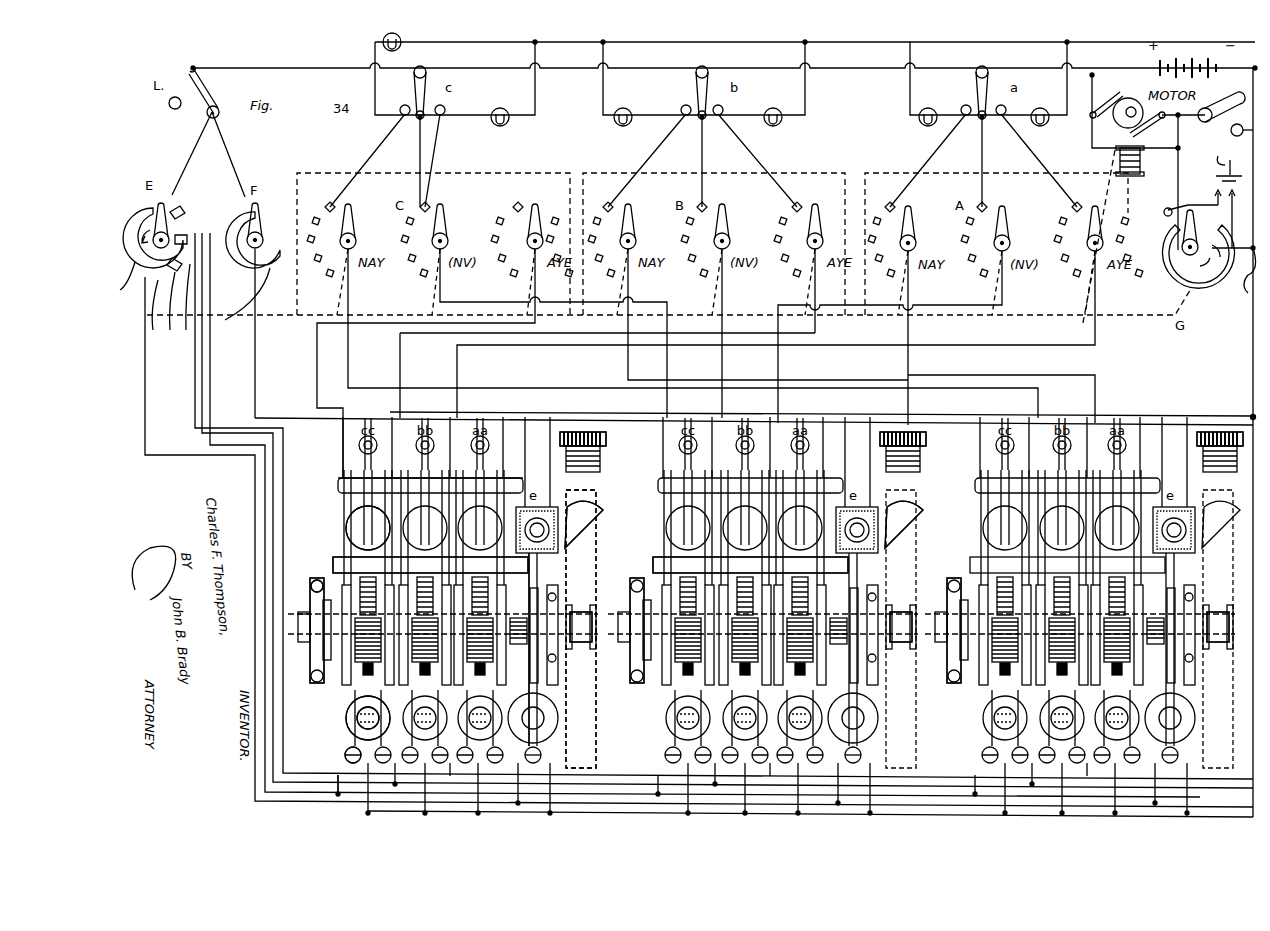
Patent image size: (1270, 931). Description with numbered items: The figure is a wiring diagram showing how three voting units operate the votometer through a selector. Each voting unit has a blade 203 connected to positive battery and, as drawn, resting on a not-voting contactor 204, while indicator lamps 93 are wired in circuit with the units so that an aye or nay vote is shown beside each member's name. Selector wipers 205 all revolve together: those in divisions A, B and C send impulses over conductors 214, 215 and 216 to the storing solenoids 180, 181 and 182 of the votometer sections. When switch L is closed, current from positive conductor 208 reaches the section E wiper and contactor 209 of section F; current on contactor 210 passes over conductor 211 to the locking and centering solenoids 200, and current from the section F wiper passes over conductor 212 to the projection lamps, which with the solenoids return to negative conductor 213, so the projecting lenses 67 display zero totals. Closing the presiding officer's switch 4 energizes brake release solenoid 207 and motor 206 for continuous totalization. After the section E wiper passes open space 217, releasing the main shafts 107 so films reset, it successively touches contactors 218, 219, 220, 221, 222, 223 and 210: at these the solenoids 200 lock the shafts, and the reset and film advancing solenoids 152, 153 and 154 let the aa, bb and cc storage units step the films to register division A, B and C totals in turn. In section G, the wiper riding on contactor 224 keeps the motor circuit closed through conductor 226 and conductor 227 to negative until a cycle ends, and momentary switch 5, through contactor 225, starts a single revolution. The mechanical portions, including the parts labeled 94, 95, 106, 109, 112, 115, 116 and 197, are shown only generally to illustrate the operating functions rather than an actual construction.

The indicator lamp 93 is at (382, 47).
The blade 203 is at (415, 92).
The not-voting contactor 204 is at (685, 161).
The selector wiper 205 is at (1180, 215).
The selector driving motor 206 is at (1135, 96).
The brake release solenoid 207 is at (1118, 160).
The positive conductor 208 is at (812, 70).
The contactor 209 is at (259, 266).
The contactor 210 is at (650, 515).
The conductor 211 is at (146, 412).
The conductor 212 is at (262, 297).
The negative conductor 213 is at (1252, 348).
The conductor 214 is at (440, 292).
The conductor 215 is at (722, 292).
The conductor 216 is at (1002, 292).
The open space 217 is at (158, 330).
The contactor 218 is at (174, 328).
The contactor 219 is at (190, 325).
The contactor 220 is at (724, 506).
The contactor 221 is at (727, 510).
The contactor 222 is at (223, 154).
The contactor 223 is at (192, 153).
The contactor 224 is at (1183, 292).
The contactor 225 is at (1194, 183).
The conductor 226 is at (1176, 186).
The conductor 227 is at (1237, 276).
The projecting lens 67 is at (608, 460).
The indicator 95 is at (598, 507).
The register 94 is at (905, 629).
The storing solenoid 182 is at (350, 520).
The storing solenoid 181 is at (368, 530).
The storing solenoid 180 is at (360, 545).
The plate 109 is at (312, 585).
The screw 116 is at (310, 595).
The reset and film advancing solenoid 154 is at (355, 705).
The reset and film advancing solenoid 153 is at (357, 715).
The reset and film advancing solenoid 152 is at (350, 738).
The conductor 115 is at (300, 683).
The shaft 112 is at (300, 645).
The main shaft 107 is at (612, 640).
The bar 106 is at (848, 570).
The rod 197 is at (527, 665).
The locking and centering solenoid 200 is at (575, 690).
The presiding officer's switch 4 is at (1221, 99).
The switch 5 is at (1229, 160).